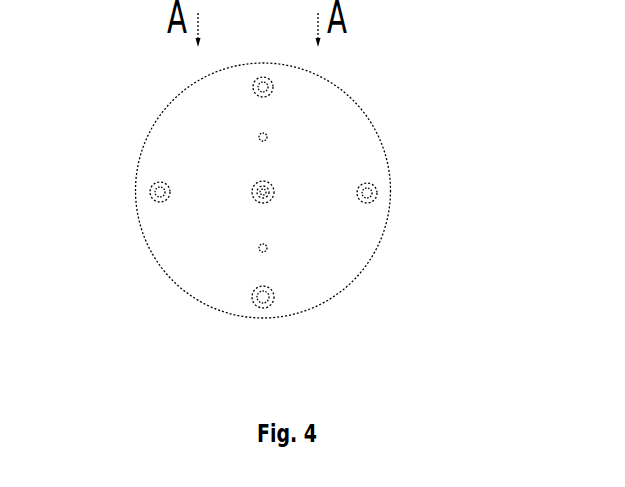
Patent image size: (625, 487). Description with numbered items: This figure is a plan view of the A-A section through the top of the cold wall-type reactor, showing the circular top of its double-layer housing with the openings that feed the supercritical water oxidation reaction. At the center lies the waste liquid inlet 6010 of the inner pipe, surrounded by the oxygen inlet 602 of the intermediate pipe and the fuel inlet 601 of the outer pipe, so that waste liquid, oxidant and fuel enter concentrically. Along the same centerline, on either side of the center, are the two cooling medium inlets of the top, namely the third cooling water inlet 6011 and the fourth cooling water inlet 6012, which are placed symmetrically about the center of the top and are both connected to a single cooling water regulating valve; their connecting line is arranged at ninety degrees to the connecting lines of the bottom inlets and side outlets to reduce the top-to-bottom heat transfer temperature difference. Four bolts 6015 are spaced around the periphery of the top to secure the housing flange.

The fuel inlet 601 is at (281, 191).
The waste liquid inlet 6010 is at (283, 179).
The 3# cooling water inlet 6011 is at (279, 134).
The 4# cooling water inlet 6012 is at (282, 209).
The oxygen inlet 602 is at (280, 250).
The bolt 6015 is at (278, 83).